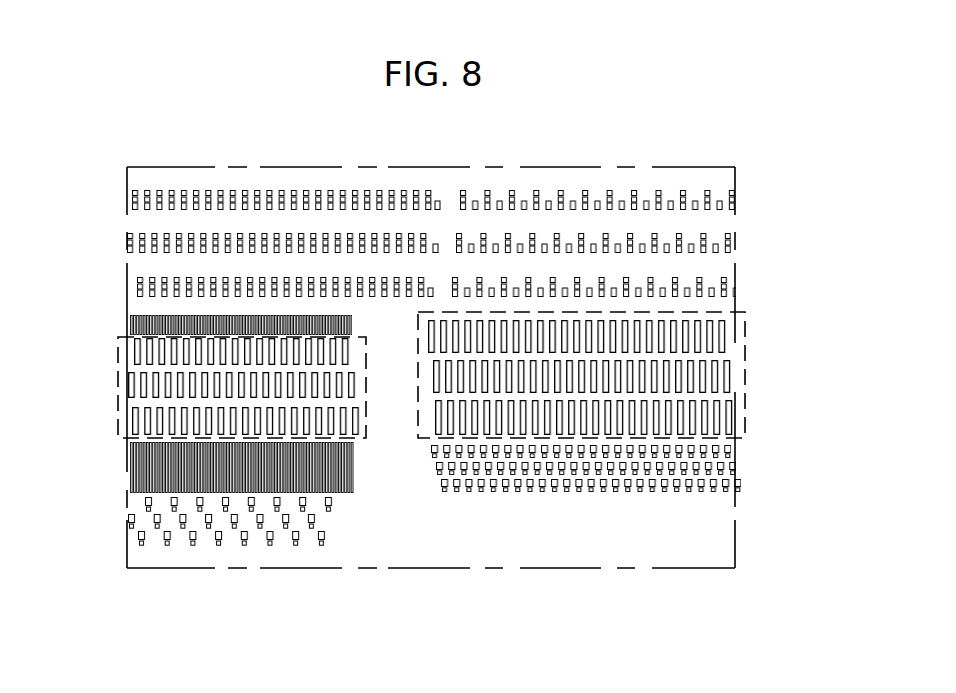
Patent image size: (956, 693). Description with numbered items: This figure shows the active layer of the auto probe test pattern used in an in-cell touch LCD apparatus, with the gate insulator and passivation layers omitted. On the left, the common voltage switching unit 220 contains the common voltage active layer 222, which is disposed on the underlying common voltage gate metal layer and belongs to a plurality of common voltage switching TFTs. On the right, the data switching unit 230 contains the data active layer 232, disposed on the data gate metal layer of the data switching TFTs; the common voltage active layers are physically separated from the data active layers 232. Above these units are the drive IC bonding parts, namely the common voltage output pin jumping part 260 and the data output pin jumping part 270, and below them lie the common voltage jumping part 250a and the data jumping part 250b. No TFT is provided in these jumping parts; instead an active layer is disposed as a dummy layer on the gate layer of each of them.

The common voltage switching unit 220 is at (118, 410).
The common voltage active layer 222 is at (150, 359).
The data switching unit 230 is at (745, 414).
The data active layer 232 is at (715, 372).
The common voltage jumping part 250a is at (233, 542).
The data jumping part 250b is at (593, 490).
The common voltage output pin jumping part 260 is at (304, 212).
The data output pin jumping part 270 is at (616, 216).